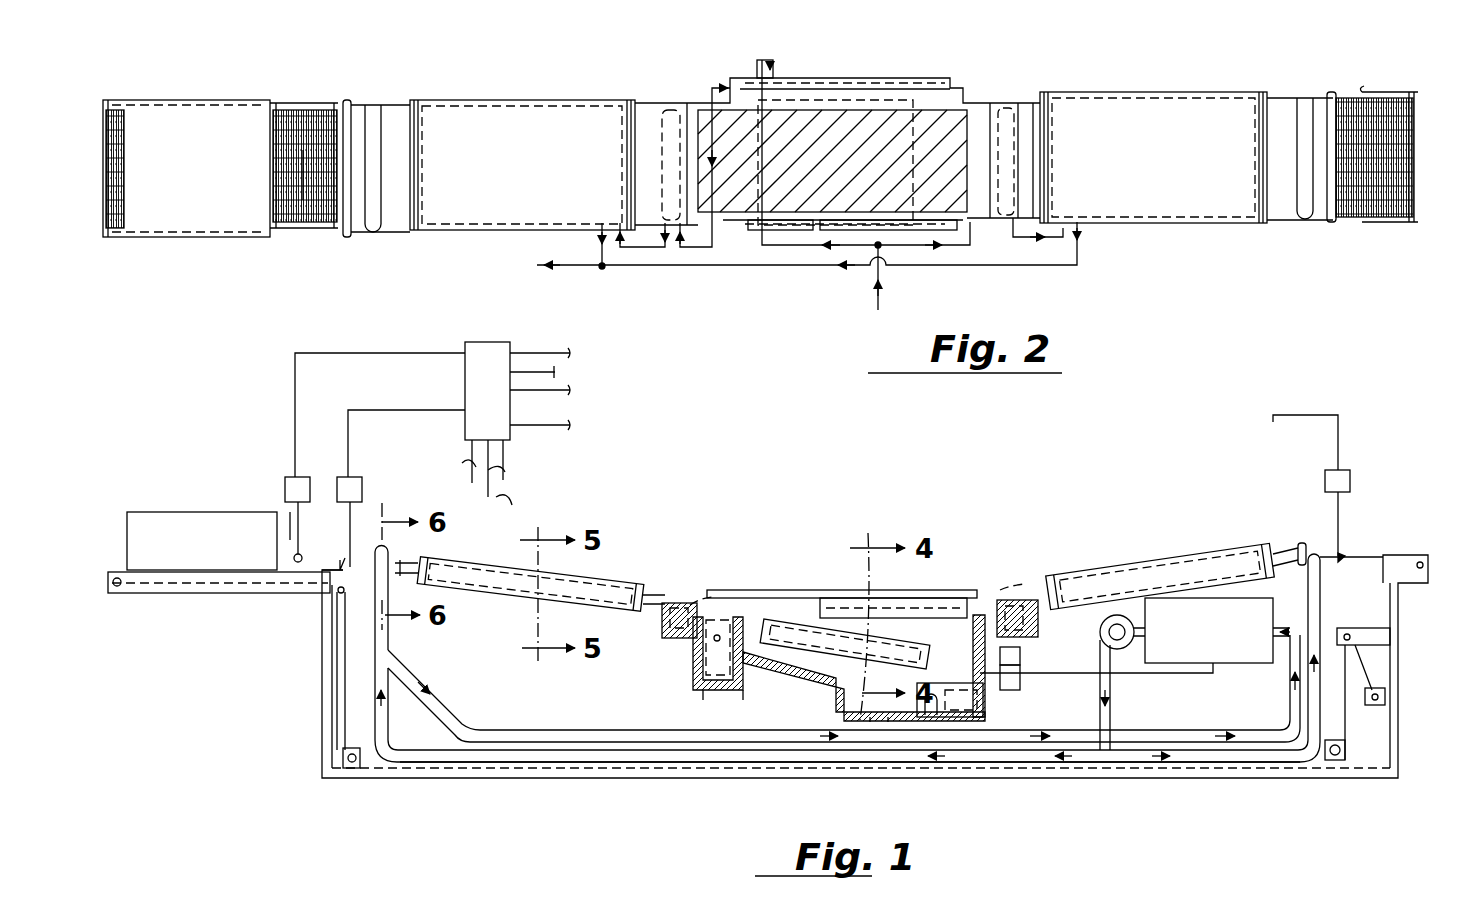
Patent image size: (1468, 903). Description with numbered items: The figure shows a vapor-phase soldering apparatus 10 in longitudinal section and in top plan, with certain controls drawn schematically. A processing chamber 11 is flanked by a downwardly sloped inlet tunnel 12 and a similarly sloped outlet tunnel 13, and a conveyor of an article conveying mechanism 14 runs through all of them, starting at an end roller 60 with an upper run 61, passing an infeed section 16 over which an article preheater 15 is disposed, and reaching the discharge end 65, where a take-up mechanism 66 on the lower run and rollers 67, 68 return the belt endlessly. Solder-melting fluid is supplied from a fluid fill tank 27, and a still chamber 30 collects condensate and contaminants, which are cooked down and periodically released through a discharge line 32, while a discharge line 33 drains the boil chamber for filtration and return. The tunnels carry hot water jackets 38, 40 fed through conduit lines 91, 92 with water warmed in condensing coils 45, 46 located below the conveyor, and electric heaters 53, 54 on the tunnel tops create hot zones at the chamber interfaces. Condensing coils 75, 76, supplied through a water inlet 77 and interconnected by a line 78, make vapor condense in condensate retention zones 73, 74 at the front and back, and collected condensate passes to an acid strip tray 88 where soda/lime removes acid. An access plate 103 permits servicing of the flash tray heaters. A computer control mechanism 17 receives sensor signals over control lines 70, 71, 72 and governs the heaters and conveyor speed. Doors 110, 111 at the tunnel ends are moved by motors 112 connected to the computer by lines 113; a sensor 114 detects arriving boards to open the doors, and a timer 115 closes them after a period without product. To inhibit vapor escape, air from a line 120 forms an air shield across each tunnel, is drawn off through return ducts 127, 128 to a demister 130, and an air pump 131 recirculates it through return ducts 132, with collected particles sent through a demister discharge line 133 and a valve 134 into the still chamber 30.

In FIG. 1, the apparatus 10 is at (318, 674).
In FIG. 2, the processing chamber 11 is at (942, 100).
In FIG. 1, the processing chamber 11 is at (766, 590).
In FIG. 2, the inlet tunnel 12 is at (396, 102).
In FIG. 1, the inlet tunnel 12 is at (420, 556).
In FIG. 2, the outlet tunnel 13 is at (984, 98).
In FIG. 1, the outlet tunnel 13 is at (1282, 546).
In FIG. 2, the article conveying mechanism 14 is at (312, 102).
In FIG. 1, the article conveying mechanism 14 is at (290, 548).
In FIG. 2, the article preheater 15 is at (200, 96).
In FIG. 1, the article preheater 15 is at (195, 508).
In FIG. 1, the infeed section 16 is at (206, 596).
In FIG. 1, the control mechanism 17 is at (470, 338).
In FIG. 2, the fluid fill tank 27 is at (722, 232).
In FIG. 1, the fluid fill tank 27 is at (693, 660).
In FIG. 1, the still chamber 30 is at (966, 722).
In FIG. 1, the discharge line 32 is at (928, 720).
In FIG. 1, the discharge line 33 is at (878, 726).
In FIG. 2, the hot water jacket 38 is at (506, 115).
In FIG. 1, the hot water jacket 38 is at (586, 580).
In FIG. 2, the hot water jacket 40 is at (1170, 101).
In FIG. 1, the hot water jacket 40 is at (1140, 560).
In FIG. 2, the condensing coil 45 is at (668, 108).
In FIG. 1, the condensing coil 45 is at (695, 584).
In FIG. 2, the condensing coil 46 is at (1012, 106).
In FIG. 1, the condensing coil 46 is at (1003, 588).
In FIG. 2, the electric heater 53 is at (657, 158).
In FIG. 1, the electric heater 53 is at (672, 600).
In FIG. 2, the electric heater 54 is at (1020, 158).
In FIG. 1, the electric heater 54 is at (1013, 598).
In FIG. 2, the end roller 60 is at (107, 208).
In FIG. 1, the end roller 60 is at (115, 576).
In FIG. 2, the upper run 61 is at (303, 192).
In FIG. 1, the upper run 61 is at (336, 563).
In FIG. 2, the discharge end 65 is at (1352, 96).
In FIG. 1, the discharge end 65 is at (1388, 554).
In FIG. 1, the take-up mechanism 66 is at (1372, 622).
In FIG. 1, the roller 67 is at (1348, 755).
In FIG. 1, the roller 68 is at (335, 762).
In FIG. 1, the control line 70 is at (570, 388).
In FIG. 1, the control line 71 is at (565, 424).
In FIG. 1, the control line 72 is at (535, 352).
In FIG. 2, the condensate retention zone 73 is at (915, 250).
In FIG. 1, the condensate retention zone 73 is at (920, 598).
In FIG. 2, the condensate retention zone 74 is at (840, 78).
In FIG. 2, the condensing coil 75 is at (822, 232).
In FIG. 1, the condensing coil 75 is at (848, 620).
In FIG. 2, the condensing coil 76 is at (905, 78).
In FIG. 2, the water inlet 77 is at (875, 264).
In FIG. 2, the line 78 is at (760, 154).
In FIG. 1, the acid strip tray 88 is at (748, 694).
In FIG. 2, the conduit line 91 is at (645, 248).
In FIG. 2, the conduit line 92 is at (1060, 245).
In FIG. 1, the access plate 103 is at (806, 664).
In FIG. 1, the door 110 is at (336, 574).
In FIG. 1, the door 111 is at (1345, 552).
In FIG. 1, the motor 112 is at (362, 477).
In FIG. 1, the line 113 is at (440, 410).
In FIG. 1, the sensor 114 is at (300, 562).
In FIG. 1, the timer 115 is at (292, 470).
In FIG. 1, the line 120 is at (390, 714).
In FIG. 1, the return duct 127 is at (400, 665).
In FIG. 1, the return duct 128 is at (1296, 628).
In FIG. 1, the demister 130 is at (1235, 643).
In FIG. 1, the air pump 131 is at (1100, 633).
In FIG. 1, the return duct 132 is at (1028, 750).
In FIG. 1, the demister discharge line 133 is at (1082, 675).
In FIG. 1, the valve 134 is at (1012, 691).